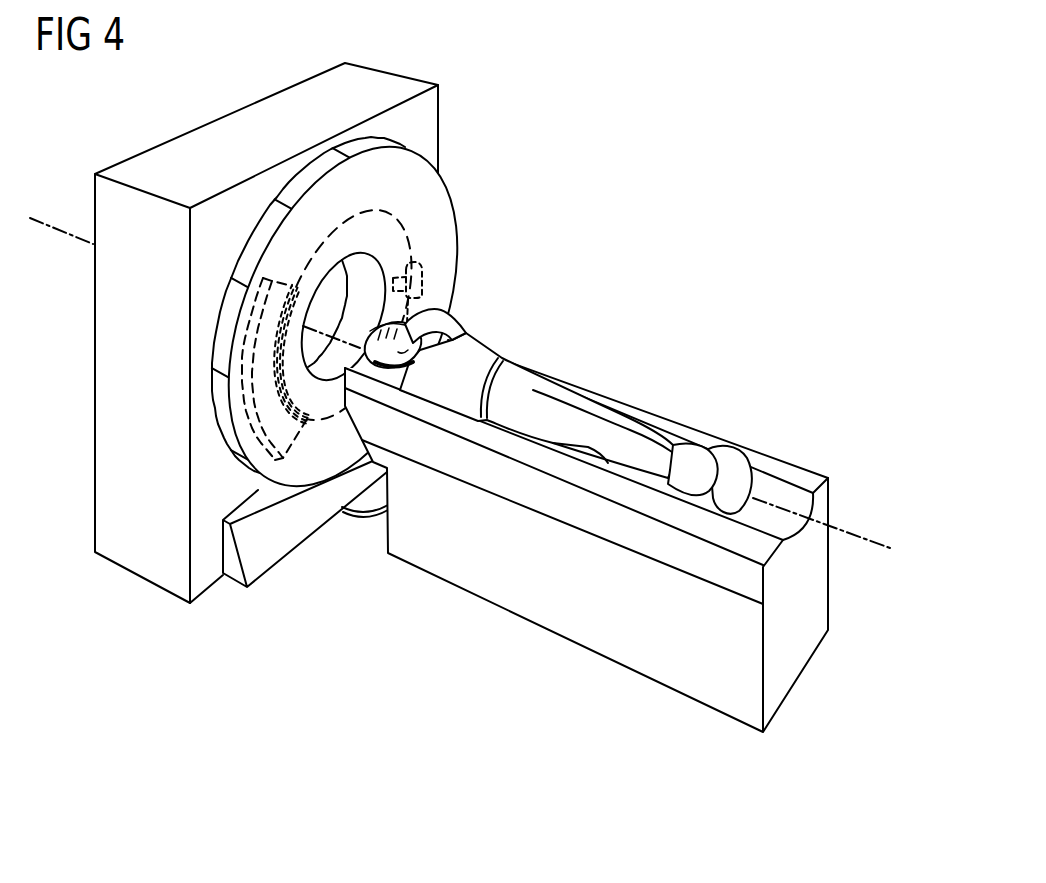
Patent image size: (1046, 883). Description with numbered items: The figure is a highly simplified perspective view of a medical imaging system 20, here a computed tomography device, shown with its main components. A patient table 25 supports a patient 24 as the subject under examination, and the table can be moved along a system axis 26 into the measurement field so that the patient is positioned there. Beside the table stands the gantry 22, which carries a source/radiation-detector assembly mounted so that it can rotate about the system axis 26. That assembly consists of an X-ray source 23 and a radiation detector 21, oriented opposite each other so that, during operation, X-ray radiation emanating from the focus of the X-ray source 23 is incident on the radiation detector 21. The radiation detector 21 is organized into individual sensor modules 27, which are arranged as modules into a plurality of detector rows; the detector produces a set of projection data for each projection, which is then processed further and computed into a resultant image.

The medical imaging system 20 is at (445, 673).
The radiation detector 21 is at (256, 348).
The gantry 22 is at (374, 210).
The X-ray source 23 is at (413, 258).
The patient 24 is at (450, 333).
The patient table 25 is at (742, 475).
The system axis 26 is at (847, 532).
The sensor modules 27 is at (265, 385).